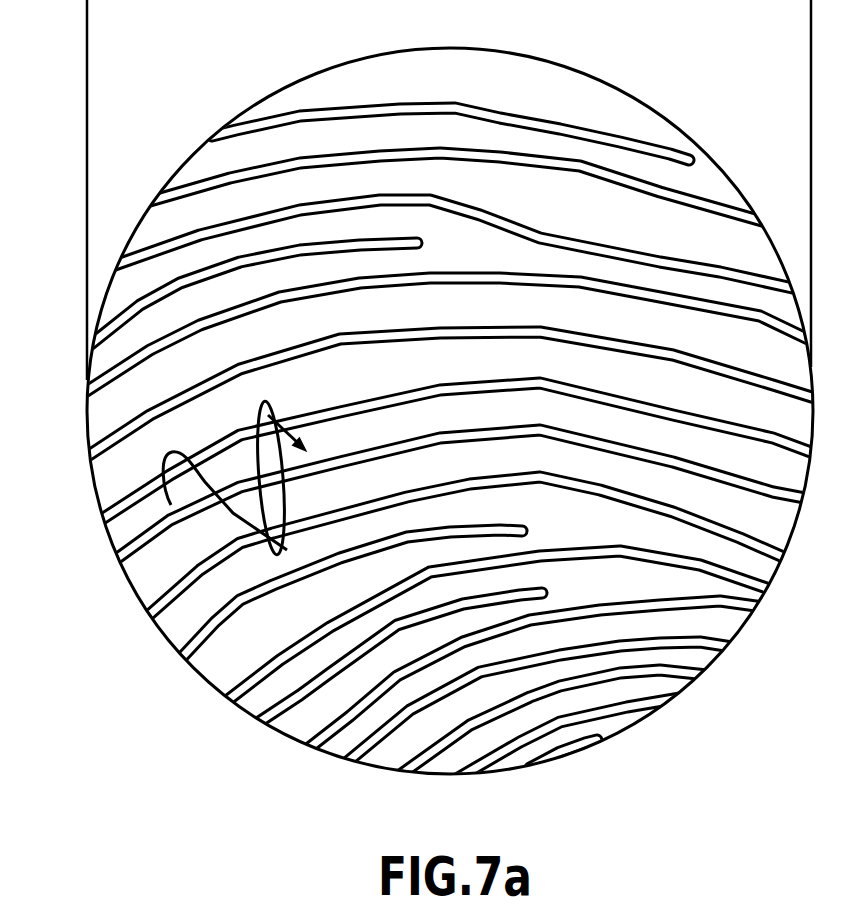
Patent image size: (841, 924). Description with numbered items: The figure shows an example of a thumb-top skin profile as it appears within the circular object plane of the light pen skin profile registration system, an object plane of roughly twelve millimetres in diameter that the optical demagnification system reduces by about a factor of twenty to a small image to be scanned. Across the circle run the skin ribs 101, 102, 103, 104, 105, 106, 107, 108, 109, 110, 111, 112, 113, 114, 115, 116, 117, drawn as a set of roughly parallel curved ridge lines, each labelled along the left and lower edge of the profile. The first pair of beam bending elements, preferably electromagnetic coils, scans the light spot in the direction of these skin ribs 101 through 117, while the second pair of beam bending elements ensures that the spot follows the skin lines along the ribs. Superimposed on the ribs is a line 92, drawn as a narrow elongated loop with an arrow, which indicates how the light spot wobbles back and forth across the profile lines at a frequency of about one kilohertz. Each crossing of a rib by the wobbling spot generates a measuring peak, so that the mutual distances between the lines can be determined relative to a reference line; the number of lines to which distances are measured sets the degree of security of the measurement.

The line 92 is at (233, 517).
The skin rib 101 is at (536, 767).
The skin rib 102 is at (465, 776).
The skin rib 103 is at (410, 773).
The skin rib 104 is at (352, 763).
The skin rib 105 is at (312, 749).
The skin rib 106 is at (260, 722).
The skin rib 107 is at (228, 701).
The skin rib 108 is at (183, 658).
The skin rib 109 is at (150, 616).
The skin rib 110 is at (118, 558).
The skin rib 111 is at (104, 518).
The skin rib 112 is at (90, 454).
The skin rib 113 is at (91, 389).
The skin rib 114 is at (96, 340).
The skin rib 115 is at (128, 262).
The skin rib 116 is at (168, 196).
The skin rib 117 is at (238, 130).